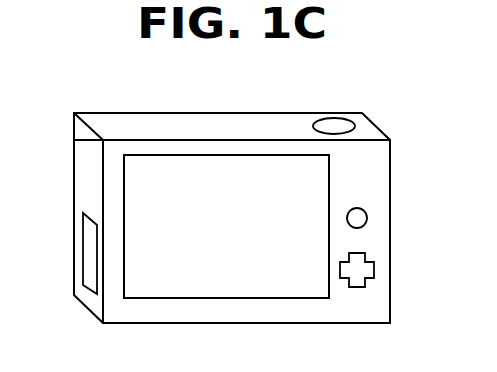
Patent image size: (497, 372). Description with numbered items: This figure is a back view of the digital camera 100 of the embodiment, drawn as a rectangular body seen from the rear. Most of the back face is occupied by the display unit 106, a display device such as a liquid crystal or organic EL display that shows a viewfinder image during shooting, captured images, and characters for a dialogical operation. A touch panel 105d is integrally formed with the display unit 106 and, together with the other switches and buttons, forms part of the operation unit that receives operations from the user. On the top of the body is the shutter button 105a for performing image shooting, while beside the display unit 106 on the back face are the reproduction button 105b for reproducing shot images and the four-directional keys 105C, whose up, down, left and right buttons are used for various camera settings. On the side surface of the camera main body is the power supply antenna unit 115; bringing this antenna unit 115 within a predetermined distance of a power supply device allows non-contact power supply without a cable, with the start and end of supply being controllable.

The digital camera 100 is at (257, 112).
The display unit 106 is at (329, 173).
The shutter button 105a is at (330, 125).
The reproduction button 105b is at (366, 213).
The four-directional keys 105C is at (366, 257).
The touch panel 105d is at (157, 155).
The power supply antenna unit 115 is at (85, 246).